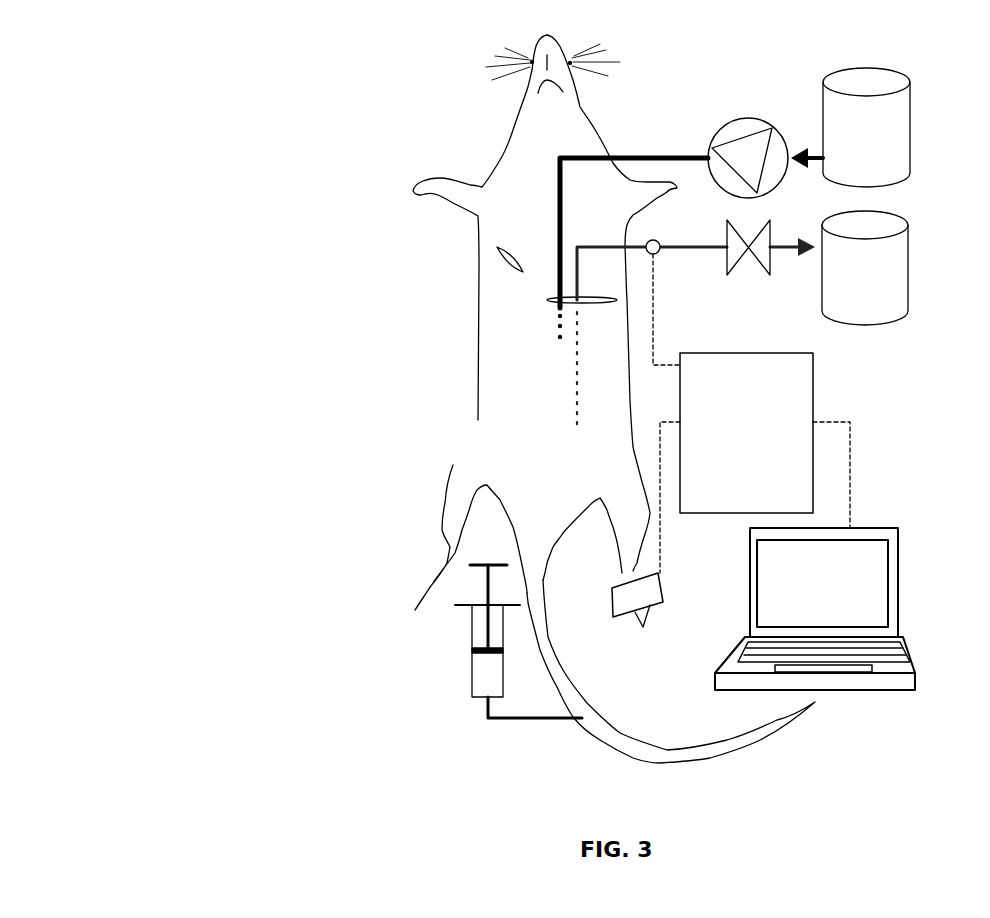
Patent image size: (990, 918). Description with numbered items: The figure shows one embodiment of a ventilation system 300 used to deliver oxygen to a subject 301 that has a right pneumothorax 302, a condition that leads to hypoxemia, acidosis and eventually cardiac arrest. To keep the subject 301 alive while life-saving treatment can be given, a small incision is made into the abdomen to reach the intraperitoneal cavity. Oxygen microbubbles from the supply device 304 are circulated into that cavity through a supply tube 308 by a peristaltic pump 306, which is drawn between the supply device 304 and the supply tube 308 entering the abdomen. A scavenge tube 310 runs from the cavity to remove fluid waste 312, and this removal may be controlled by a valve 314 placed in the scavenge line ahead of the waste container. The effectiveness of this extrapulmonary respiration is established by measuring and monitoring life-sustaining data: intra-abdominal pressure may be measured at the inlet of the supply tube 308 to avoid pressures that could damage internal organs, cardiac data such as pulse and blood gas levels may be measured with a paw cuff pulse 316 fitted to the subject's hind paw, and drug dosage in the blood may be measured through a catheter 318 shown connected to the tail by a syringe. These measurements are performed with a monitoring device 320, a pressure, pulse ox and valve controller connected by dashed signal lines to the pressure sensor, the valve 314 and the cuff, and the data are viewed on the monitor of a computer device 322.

The ventilation system 300 is at (287, 775).
The subject 301 is at (523, 166).
The right pneumothorax 302 is at (495, 260).
The supply device 304 is at (882, 127).
The peristaltic pump 306 is at (747, 105).
The supply tube 308 is at (545, 327).
The scavenge tube 310 is at (561, 397).
The fluid waste 312 is at (865, 268).
The valve 314 is at (729, 274).
The paw cuff pulse 316 is at (636, 644).
The catheter 318 is at (492, 669).
The monitoring device 320 is at (760, 413).
The computer device 322 is at (837, 609).